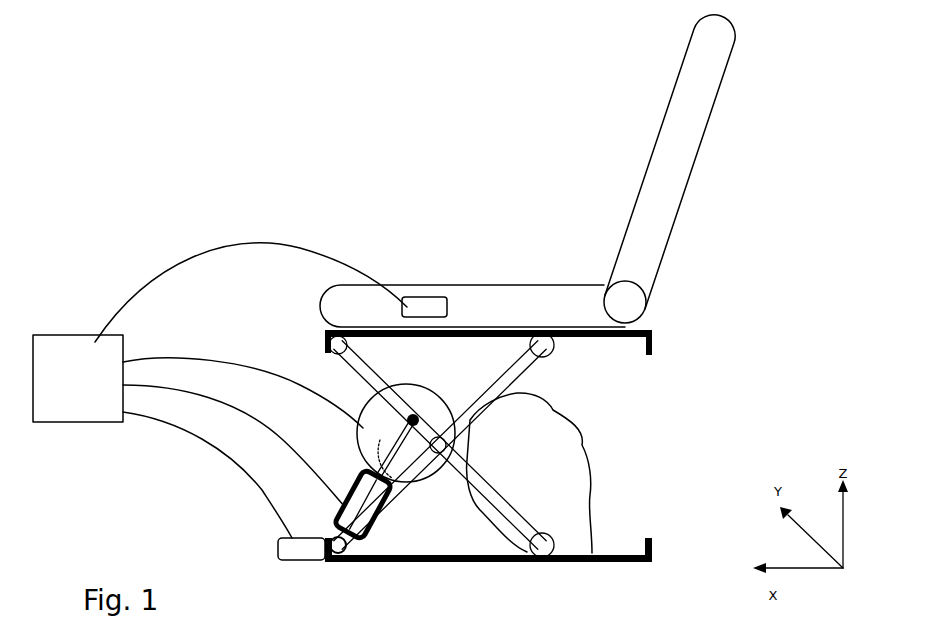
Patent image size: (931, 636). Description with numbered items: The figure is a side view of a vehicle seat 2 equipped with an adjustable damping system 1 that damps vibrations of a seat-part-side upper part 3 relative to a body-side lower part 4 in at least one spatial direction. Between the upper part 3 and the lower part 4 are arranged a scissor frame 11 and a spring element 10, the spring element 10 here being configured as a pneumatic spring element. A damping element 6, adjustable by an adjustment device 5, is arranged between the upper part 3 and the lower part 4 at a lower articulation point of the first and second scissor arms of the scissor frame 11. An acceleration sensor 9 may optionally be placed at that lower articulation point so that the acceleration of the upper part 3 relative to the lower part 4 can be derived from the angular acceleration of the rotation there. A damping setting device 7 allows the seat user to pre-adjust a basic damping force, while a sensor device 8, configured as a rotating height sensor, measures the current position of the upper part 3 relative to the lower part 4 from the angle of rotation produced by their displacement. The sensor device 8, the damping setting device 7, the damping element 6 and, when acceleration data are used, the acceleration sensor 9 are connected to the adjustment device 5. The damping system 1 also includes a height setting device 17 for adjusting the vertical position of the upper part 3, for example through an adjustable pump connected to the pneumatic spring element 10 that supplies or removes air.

The damping system 1 is at (386, 312).
The vehicle seat 2 is at (525, 171).
The seat-part-side upper part 3 is at (645, 328).
The body-side lower part 4 is at (607, 563).
The adjustment device 5 is at (93, 412).
The damping element 6 is at (362, 532).
The damping setting device 7 is at (443, 298).
The sensor device 8 is at (420, 466).
The acceleration sensor 9 is at (303, 557).
The spring element 10 is at (577, 455).
The scissor frame 11 is at (513, 345).
The height setting device 17 is at (431, 300).